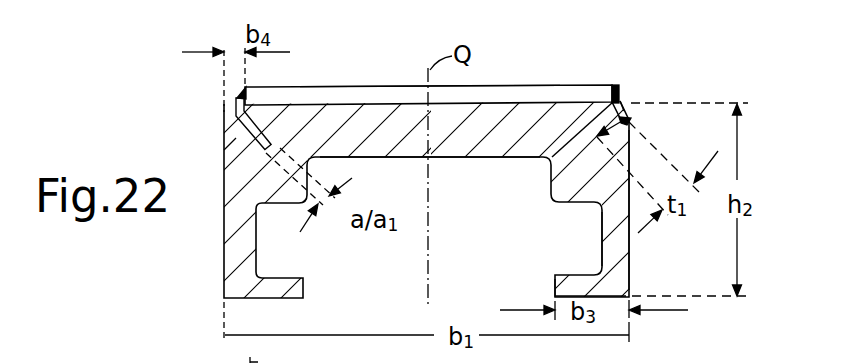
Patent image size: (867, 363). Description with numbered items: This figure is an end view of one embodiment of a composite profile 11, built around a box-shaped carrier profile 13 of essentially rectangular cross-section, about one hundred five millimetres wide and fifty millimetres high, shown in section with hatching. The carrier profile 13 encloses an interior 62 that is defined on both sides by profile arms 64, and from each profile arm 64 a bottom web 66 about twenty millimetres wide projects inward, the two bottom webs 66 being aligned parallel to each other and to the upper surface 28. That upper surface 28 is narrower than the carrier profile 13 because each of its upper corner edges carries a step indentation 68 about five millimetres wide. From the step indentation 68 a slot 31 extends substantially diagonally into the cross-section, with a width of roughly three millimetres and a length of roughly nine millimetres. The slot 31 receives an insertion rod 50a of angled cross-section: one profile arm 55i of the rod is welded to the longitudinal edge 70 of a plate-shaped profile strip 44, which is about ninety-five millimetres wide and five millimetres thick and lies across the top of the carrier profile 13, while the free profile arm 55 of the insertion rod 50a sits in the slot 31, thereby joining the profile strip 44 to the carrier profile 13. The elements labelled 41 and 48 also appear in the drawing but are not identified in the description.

The composite profile 11 is at (193, 294).
The carrier profile 13 is at (216, 241).
The upper surface 28 is at (568, 89).
The slot 31 is at (228, 150).
The cover plate 41 is at (318, 75).
The profile strip 44 is at (516, 74).
The edge 48 is at (626, 92).
The insertion rod 50a is at (634, 95).
The free profile arm 55 is at (631, 119).
The profile arm 55i is at (548, 160).
The interior 62 is at (389, 183).
The profile arms 64 is at (620, 220).
The bottom webs 66 is at (555, 285).
The step indentation 68 is at (232, 118).
The longitudinal edge 70 is at (618, 85).